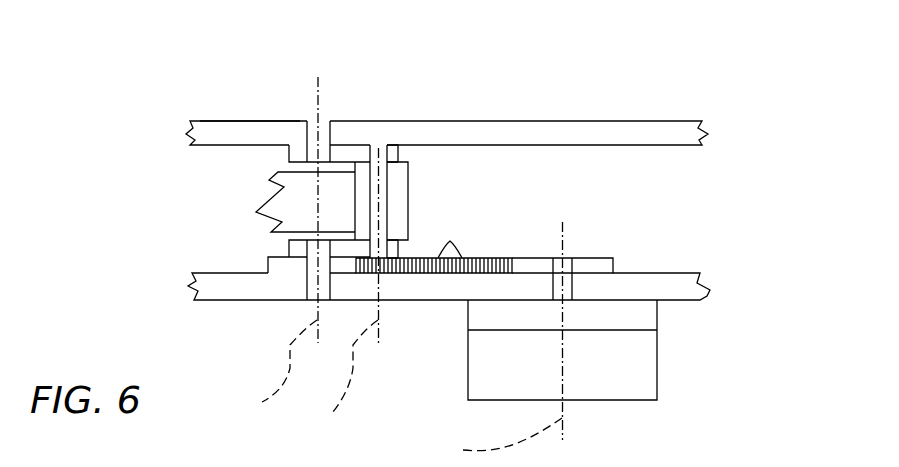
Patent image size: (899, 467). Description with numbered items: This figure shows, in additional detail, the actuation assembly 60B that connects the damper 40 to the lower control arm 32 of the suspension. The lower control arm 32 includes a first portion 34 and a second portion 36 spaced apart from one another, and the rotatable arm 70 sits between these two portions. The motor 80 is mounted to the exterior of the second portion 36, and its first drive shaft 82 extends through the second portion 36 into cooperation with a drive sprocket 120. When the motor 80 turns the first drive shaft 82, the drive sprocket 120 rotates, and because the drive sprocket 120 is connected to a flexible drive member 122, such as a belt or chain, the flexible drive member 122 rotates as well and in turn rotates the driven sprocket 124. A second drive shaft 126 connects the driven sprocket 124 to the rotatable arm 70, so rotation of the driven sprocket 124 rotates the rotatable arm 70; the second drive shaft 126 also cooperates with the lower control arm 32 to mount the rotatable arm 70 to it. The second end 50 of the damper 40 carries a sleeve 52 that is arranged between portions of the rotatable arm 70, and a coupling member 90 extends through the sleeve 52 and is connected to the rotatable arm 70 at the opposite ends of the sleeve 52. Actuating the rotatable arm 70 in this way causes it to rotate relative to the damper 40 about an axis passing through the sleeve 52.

The actuation assembly 60B is at (158, 33).
The lower control arm 32 is at (266, 121).
The first portion 34 is at (207, 121).
The second portion 36 is at (193, 285).
The damper 40 is at (283, 183).
The second end 50 is at (408, 210).
The sleeve 52 is at (390, 183).
The rotatable arm 70 is at (287, 248).
The motor 80 is at (657, 363).
The first drive shaft 82 is at (571, 257).
The coupling member 90 is at (374, 146).
The drive sprocket 120 is at (614, 262).
The flexible drive member 122 is at (433, 274).
The driven sprocket 124 is at (268, 268).
The second drive shaft 126 is at (313, 297).